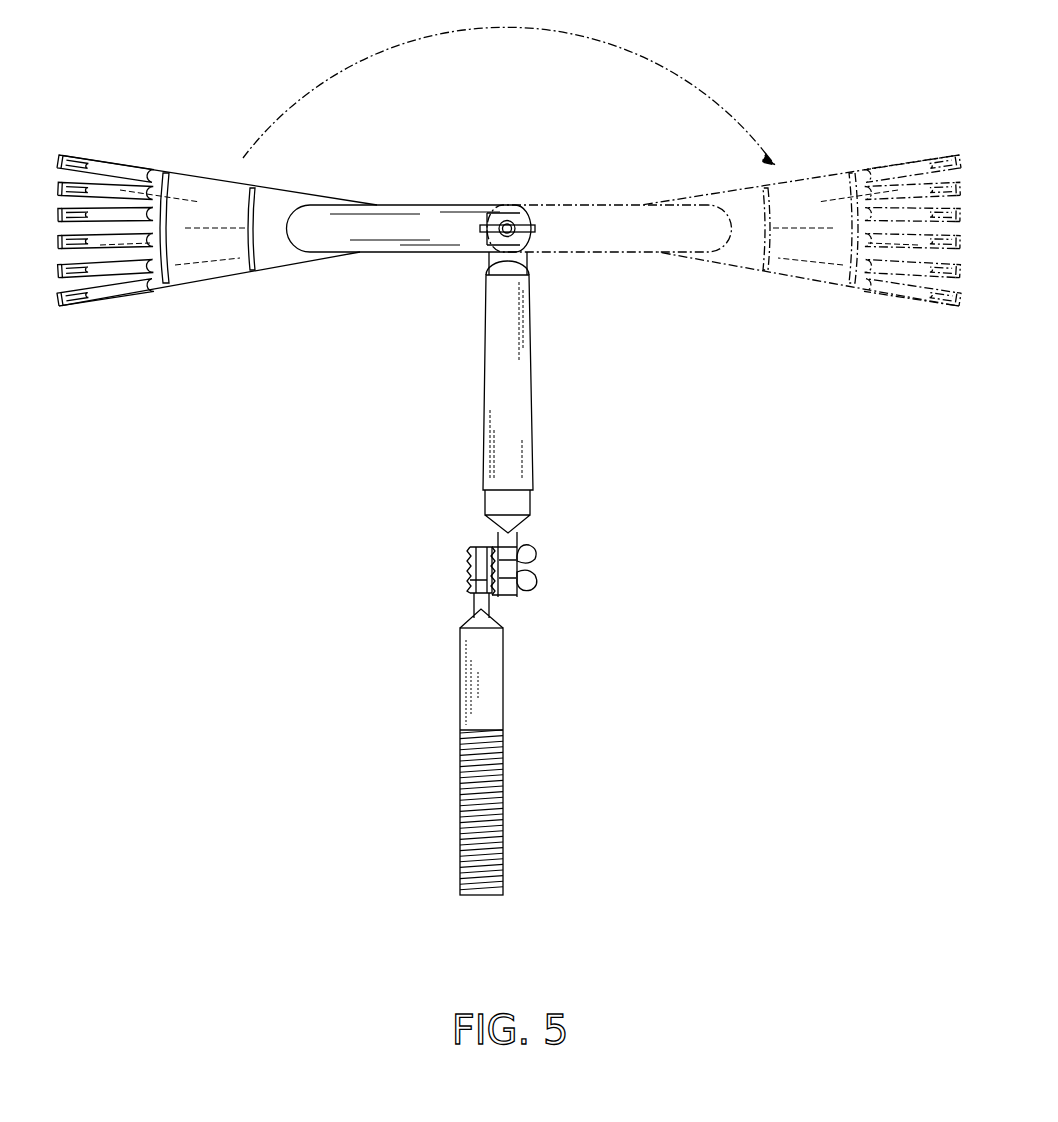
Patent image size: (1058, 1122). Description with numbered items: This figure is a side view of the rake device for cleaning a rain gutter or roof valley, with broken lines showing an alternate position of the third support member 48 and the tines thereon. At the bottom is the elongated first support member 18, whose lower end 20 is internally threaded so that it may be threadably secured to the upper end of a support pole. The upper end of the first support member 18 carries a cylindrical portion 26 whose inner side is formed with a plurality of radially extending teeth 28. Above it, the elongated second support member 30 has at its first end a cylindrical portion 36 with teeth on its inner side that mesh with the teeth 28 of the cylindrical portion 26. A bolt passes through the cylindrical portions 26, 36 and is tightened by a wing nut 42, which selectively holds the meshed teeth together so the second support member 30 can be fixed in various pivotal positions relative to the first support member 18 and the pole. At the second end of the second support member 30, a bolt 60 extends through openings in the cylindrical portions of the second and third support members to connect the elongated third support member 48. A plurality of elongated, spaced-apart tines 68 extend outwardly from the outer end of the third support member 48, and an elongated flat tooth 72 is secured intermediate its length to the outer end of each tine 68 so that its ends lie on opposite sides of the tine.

The first support member 18 is at (505, 700).
The lower end 20 is at (460, 540).
The cylindrical portion 26 is at (482, 568).
The teeth 28 is at (500, 578).
The second support member 30 is at (552, 424).
The cylindrical portion 36 is at (510, 596).
The wing nut 42 is at (530, 553).
The third support member 48 is at (437, 208).
The bolt 60 is at (509, 218).
The tines 68 is at (112, 160).
The flat tooth 72 is at (63, 157).